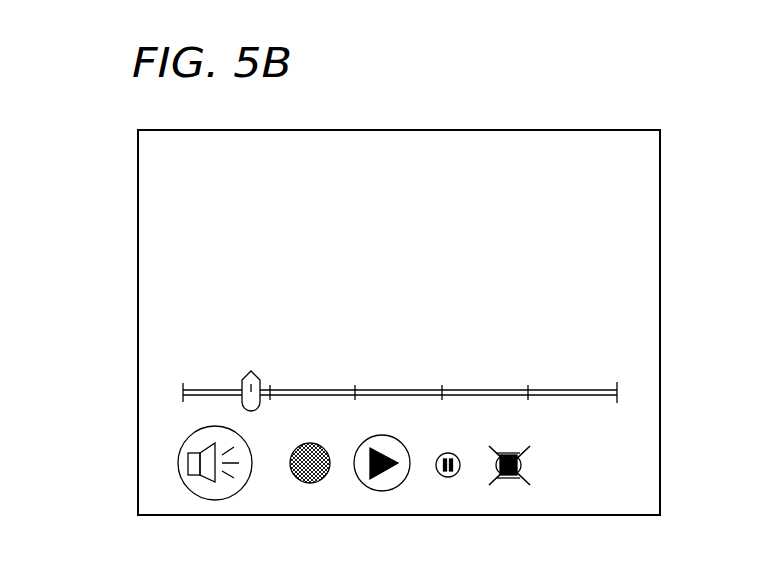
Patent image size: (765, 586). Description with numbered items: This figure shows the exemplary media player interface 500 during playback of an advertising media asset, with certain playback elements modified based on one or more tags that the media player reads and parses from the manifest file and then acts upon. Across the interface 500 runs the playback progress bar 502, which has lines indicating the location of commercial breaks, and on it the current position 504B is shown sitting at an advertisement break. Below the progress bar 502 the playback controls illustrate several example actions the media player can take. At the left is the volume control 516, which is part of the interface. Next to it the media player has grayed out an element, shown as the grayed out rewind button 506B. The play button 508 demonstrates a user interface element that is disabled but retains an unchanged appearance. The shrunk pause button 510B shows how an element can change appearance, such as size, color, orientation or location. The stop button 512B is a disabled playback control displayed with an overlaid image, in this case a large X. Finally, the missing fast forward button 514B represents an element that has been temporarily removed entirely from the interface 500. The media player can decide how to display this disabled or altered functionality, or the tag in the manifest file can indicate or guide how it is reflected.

The media player interface 500 is at (428, 130).
The playback progress bar 502 is at (183, 392).
The current position 504B is at (252, 372).
The grayed out rewind button 506B is at (308, 483).
The play button 508 is at (380, 491).
The shrunk pause button 510B is at (448, 477).
The stop button 512B is at (510, 483).
The missing fast forward button 514B is at (567, 478).
The volume control 516 is at (215, 500).